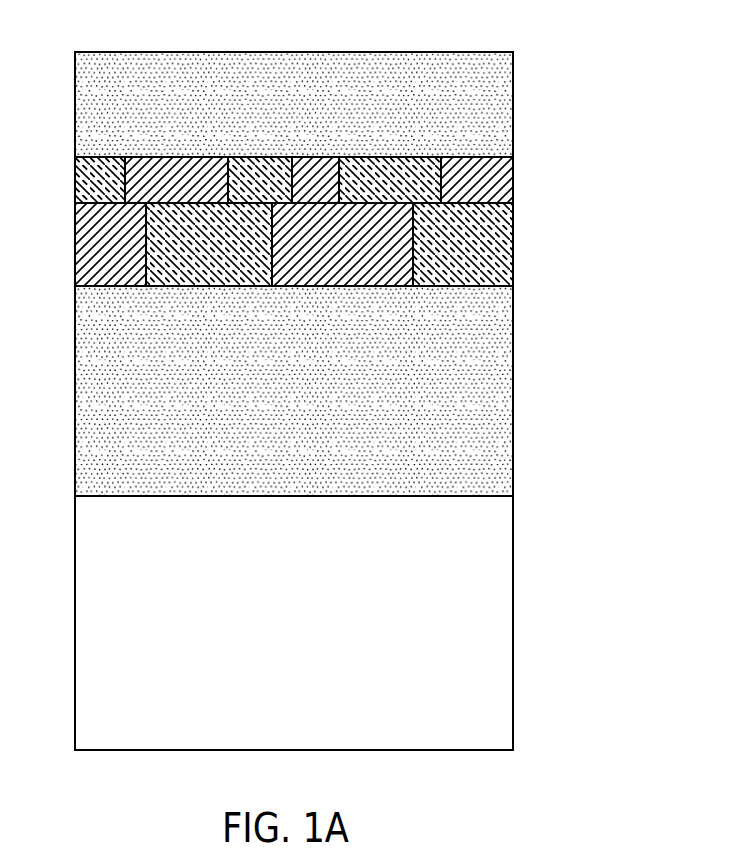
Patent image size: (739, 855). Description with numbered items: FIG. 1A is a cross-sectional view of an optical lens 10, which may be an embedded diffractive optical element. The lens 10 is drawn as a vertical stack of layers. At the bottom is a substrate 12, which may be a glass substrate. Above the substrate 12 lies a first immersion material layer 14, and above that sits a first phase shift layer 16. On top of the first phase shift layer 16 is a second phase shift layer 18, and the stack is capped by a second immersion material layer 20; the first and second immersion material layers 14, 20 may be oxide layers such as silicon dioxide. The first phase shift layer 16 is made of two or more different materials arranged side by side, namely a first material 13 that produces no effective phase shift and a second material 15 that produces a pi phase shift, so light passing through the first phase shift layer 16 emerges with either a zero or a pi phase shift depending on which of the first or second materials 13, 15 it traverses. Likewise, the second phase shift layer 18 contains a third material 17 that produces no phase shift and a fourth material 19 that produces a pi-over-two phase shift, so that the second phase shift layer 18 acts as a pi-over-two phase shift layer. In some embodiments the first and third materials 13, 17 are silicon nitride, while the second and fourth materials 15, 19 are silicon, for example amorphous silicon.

The optical lens 10 is at (572, 52).
The substrate 12 is at (477, 620).
The first material 13 is at (88, 262).
The first immersion material layer 14 is at (485, 388).
The second material 15 is at (162, 233).
The first phase shift layer 16 is at (294, 244).
The third material 17 is at (147, 168).
The second phase shift layer 18 is at (295, 153).
The fourth material 19 is at (82, 177).
The second immersion material layer 20 is at (493, 106).